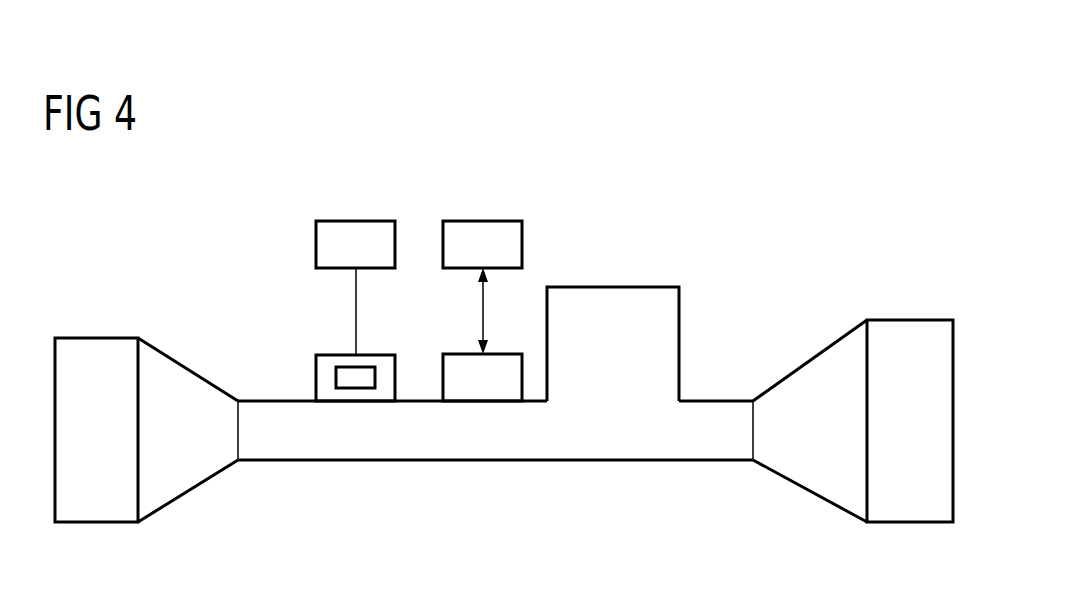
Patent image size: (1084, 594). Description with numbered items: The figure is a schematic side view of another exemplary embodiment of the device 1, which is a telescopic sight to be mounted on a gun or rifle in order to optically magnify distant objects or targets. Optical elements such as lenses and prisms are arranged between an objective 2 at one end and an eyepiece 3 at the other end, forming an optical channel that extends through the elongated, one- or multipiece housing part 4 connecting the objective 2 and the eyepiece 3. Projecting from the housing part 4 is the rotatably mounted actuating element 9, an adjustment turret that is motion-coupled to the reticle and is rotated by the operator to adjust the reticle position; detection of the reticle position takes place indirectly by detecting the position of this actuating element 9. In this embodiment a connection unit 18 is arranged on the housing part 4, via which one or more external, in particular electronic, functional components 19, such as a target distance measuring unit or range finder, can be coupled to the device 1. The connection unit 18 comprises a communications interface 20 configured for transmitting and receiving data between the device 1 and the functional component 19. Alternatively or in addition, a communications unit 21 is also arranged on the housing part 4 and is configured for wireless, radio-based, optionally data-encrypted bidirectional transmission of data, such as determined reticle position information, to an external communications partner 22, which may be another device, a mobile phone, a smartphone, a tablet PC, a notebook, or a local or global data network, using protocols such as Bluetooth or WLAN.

The device 1 is at (782, 199).
The objective 2 is at (904, 307).
The eyepiece 3 is at (101, 324).
The housing part 4 is at (712, 400).
The actuating element 9 is at (614, 287).
The connection unit 18 is at (352, 365).
The functional component 19 is at (355, 221).
The communications interface 20 is at (336, 378).
The communications unit 21 is at (458, 352).
The external communications partner 22 is at (483, 221).